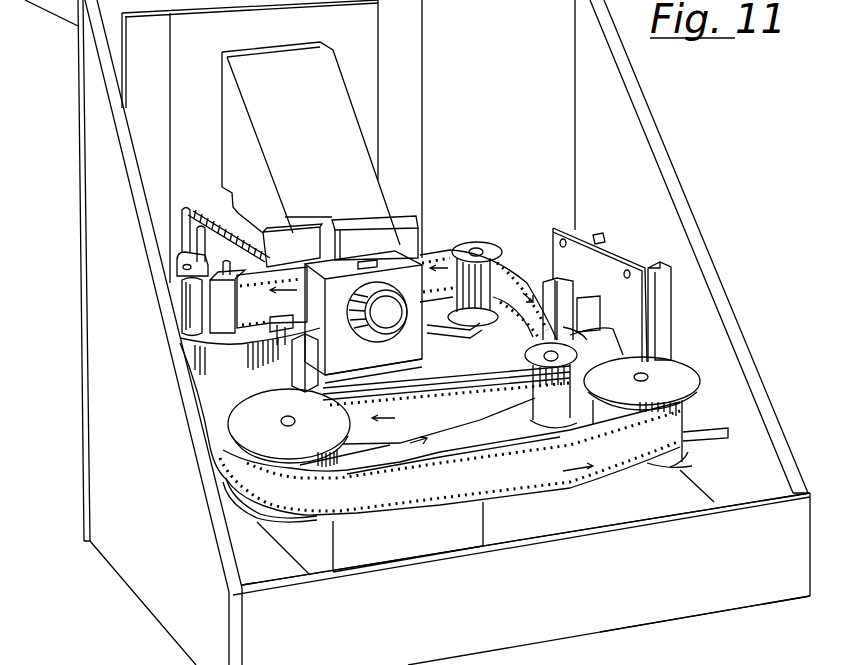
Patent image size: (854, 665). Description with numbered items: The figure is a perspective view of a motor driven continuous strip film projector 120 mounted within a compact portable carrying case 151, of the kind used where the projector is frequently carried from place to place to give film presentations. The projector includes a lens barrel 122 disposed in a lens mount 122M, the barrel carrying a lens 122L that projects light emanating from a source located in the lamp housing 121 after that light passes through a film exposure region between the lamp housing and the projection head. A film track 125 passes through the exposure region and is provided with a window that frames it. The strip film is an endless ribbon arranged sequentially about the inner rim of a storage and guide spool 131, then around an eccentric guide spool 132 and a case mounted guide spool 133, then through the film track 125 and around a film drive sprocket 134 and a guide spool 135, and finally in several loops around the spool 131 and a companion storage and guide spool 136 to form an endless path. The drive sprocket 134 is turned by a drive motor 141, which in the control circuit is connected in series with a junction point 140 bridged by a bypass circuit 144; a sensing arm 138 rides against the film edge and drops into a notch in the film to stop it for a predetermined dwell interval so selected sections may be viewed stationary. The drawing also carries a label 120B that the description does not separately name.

The compact portable carrying case 151 is at (98, 229).
The lamp housing 121 is at (324, 135).
The film track 125 is at (352, 224).
The projector 120 is at (428, 223).
The film drive sprocket 134 is at (267, 260).
The lens 122L is at (376, 244).
The guide spool 135 is at (190, 305).
The sensing arm 138 is at (274, 279).
The drive motor 141 is at (242, 376).
The lens barrel 122 is at (395, 299).
The lens mount 122M is at (348, 355).
The case mounted guide spool 133 is at (487, 247).
The eccentric guide spool 132 is at (530, 352).
The companion storage and guide spool 136 is at (683, 375).
The storage and guide spool 131 is at (313, 449).
The projector base 120B is at (526, 579).
The junction point 140 is at (490, 605).
The bypass circuit 144 is at (705, 630).